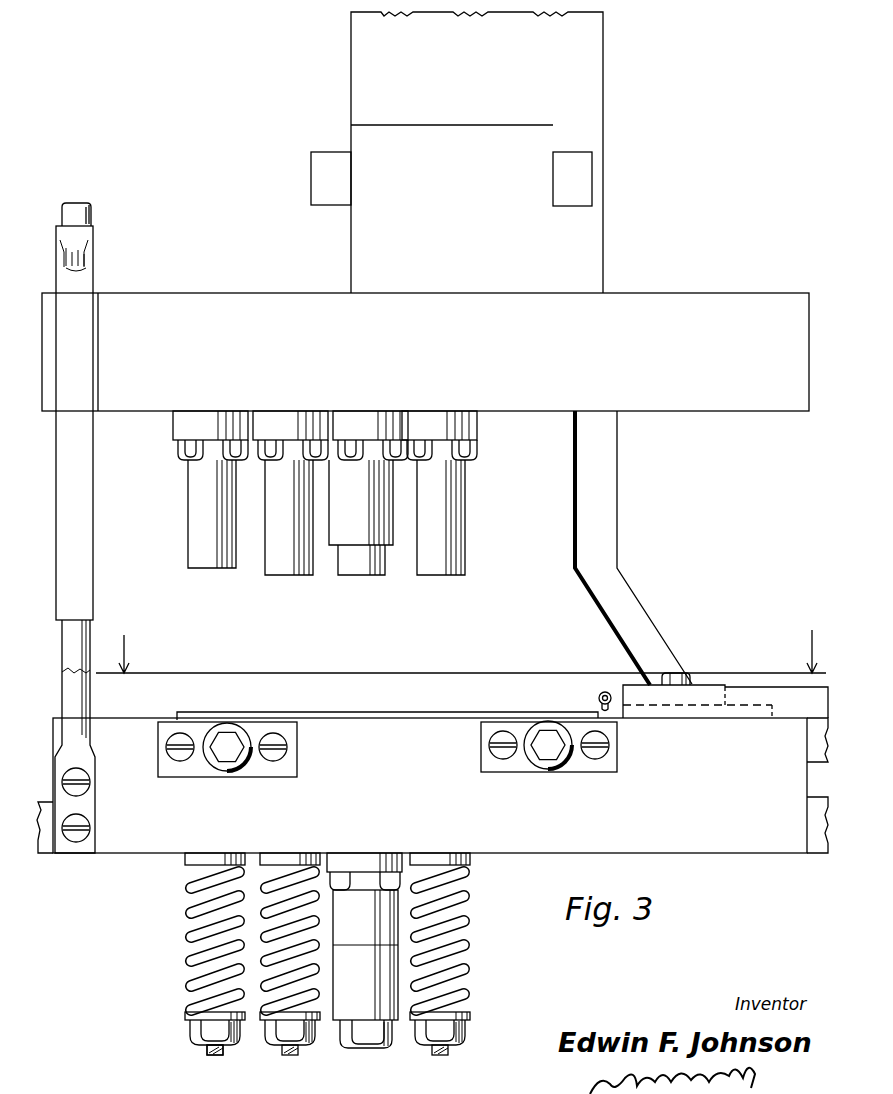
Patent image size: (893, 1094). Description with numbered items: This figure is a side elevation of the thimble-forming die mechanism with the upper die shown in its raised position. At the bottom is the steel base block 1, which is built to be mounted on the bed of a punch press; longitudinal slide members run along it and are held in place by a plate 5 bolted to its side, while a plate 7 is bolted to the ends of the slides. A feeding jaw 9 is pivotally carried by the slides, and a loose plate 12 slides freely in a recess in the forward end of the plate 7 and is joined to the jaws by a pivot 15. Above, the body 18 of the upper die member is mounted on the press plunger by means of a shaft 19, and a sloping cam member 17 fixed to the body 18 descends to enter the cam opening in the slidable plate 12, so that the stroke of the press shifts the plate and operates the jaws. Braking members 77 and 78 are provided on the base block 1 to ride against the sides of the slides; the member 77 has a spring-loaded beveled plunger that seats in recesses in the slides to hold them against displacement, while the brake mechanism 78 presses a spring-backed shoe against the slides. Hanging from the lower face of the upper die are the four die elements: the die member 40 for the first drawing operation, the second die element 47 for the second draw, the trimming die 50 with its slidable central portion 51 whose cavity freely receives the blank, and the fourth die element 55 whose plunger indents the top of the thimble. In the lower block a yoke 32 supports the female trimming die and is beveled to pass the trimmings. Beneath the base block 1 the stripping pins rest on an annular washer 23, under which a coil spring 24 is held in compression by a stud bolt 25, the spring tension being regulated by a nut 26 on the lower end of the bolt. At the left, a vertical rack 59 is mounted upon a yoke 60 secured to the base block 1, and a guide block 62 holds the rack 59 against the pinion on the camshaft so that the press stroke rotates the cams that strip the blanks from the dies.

The base block 1 is at (432, 785).
The plate 5 is at (461, 651).
The plate 7 is at (770, 690).
The feeding jaw 9 is at (480, 712).
The loose plate 12 is at (725, 690).
The pivot 15 is at (680, 673).
The sloping cam member 17 is at (612, 514).
The body of upper die member 18 is at (425, 376).
The shaft 19 is at (360, 226).
The annular washer 23 is at (185, 858).
The coil spring 24 is at (185, 918).
The stud bolt 25 is at (213, 1055).
The nut 26 is at (190, 1032).
The yoke 32 is at (337, 1012).
The die member 40 is at (190, 515).
The second die element 47 is at (287, 572).
The trimming die 50 is at (393, 545).
The central portion 51 is at (355, 575).
The fourth die element 55 is at (448, 575).
The vertical rack 59 is at (84, 565).
The yoke 60 is at (72, 661).
The guide block 62 is at (96, 378).
The braking member 77 is at (208, 775).
The brake mechanism 78 is at (542, 773).